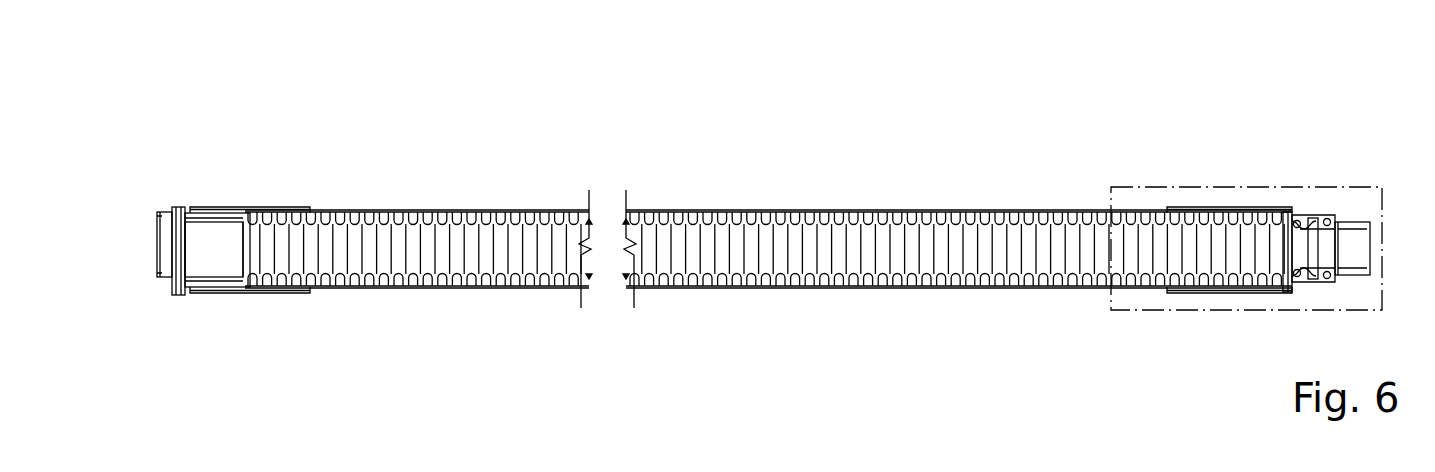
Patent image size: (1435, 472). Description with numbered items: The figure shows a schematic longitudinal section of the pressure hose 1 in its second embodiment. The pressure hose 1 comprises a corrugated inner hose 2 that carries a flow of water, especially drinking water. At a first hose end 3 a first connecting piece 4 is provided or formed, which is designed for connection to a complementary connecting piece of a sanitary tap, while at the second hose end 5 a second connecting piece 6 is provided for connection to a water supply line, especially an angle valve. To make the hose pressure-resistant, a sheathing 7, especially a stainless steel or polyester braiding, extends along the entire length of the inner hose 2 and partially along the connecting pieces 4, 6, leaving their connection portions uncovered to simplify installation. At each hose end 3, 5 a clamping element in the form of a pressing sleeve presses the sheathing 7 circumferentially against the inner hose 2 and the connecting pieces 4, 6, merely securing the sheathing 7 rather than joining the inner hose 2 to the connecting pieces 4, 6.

The pressure hose 1 is at (540, 98).
The corrugated inner hose 2 is at (346, 210).
The first hose end 3 is at (1360, 147).
The first connecting piece 4 is at (1325, 192).
The second hose end 5 is at (132, 160).
The second connecting piece 6 is at (165, 197).
The sheathing 7 is at (417, 210).